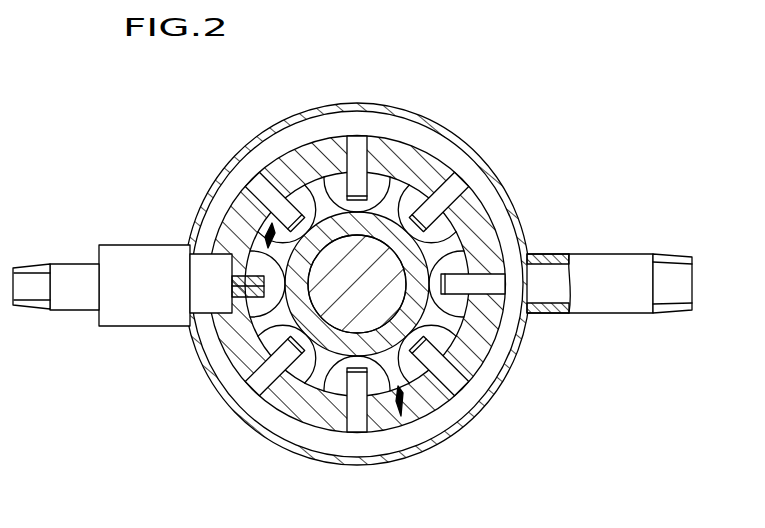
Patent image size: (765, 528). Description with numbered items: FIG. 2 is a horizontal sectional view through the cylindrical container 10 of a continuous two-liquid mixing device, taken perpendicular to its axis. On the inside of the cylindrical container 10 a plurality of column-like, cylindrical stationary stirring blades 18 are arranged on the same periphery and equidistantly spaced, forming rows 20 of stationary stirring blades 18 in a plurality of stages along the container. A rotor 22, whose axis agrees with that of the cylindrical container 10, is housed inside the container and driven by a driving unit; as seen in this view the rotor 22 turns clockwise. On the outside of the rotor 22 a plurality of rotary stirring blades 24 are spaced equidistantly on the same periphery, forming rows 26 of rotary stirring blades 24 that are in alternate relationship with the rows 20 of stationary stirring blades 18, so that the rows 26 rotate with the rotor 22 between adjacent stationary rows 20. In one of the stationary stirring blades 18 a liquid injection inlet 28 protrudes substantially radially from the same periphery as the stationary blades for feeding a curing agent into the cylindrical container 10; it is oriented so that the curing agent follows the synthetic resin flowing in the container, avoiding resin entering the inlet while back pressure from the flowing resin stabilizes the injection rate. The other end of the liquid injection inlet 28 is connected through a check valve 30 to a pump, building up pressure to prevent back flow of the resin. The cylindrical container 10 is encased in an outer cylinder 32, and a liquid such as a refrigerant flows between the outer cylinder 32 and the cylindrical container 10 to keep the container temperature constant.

The cylindrical container 10 is at (322, 188).
The stationary stirring blades 18 is at (432, 195).
The rows of stationary stirring blades 20 is at (468, 401).
The rotor 22 is at (445, 252).
The rotary stirring blades 24 is at (258, 208).
The rows of rotary stirring blades 26 is at (399, 416).
The liquid injection inlet 28 is at (258, 238).
The check valve 30 is at (149, 330).
The outer cylinder 32 is at (517, 338).